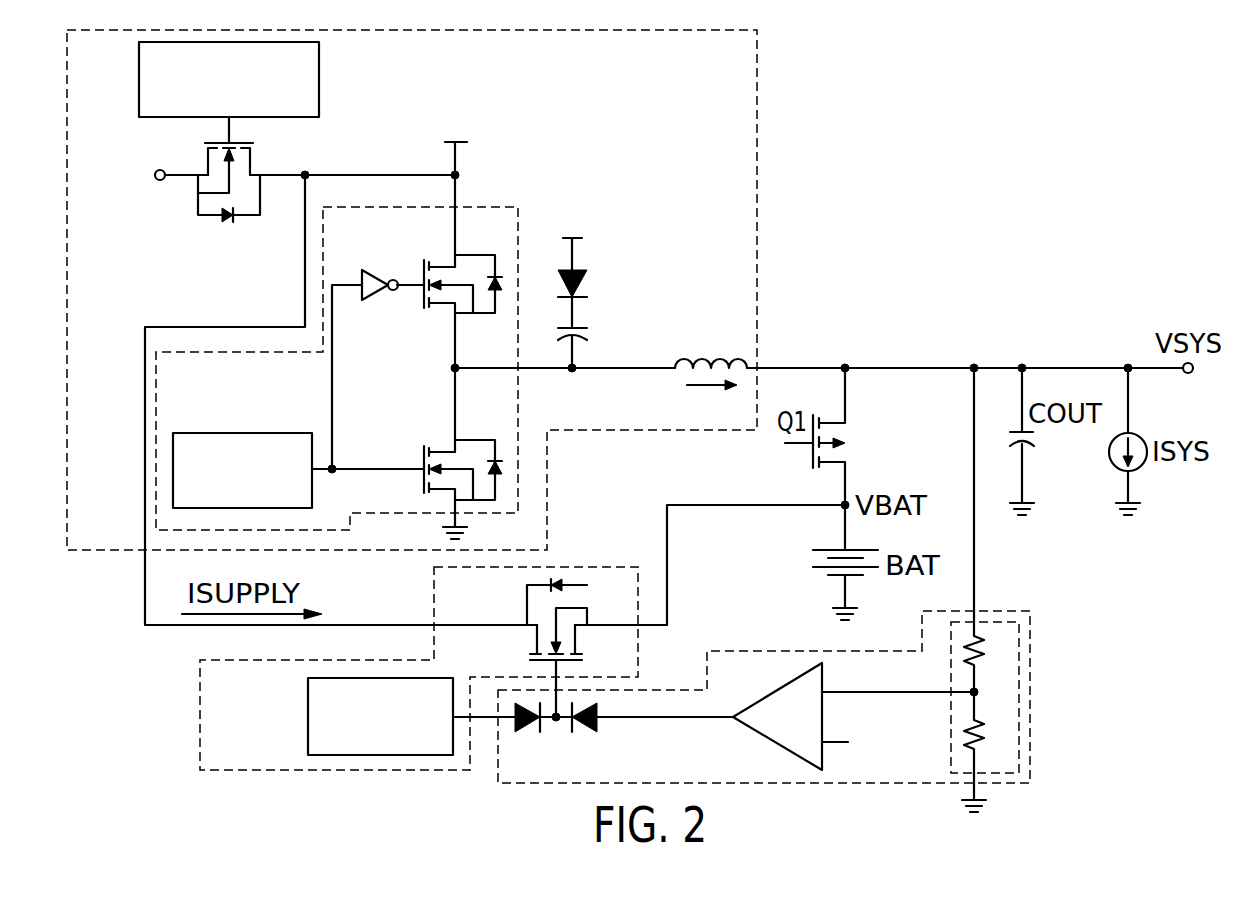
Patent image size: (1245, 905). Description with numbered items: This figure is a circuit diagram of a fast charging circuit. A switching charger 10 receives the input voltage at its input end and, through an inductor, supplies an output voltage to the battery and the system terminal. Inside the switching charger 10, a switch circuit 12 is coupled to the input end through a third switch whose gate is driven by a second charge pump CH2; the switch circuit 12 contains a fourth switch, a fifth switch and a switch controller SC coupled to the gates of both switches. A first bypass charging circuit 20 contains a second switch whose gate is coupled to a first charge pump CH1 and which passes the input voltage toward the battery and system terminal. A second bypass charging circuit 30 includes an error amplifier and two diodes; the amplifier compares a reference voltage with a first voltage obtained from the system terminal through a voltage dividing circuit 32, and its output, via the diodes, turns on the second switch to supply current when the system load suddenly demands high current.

The switching charger 10 is at (757, 112).
The switch circuit 12 is at (487, 207).
The first bypass charging circuit 20 is at (198, 716).
The second bypass charging circuit 30 is at (1030, 703).
The voltage dividing circuit 32 is at (1019, 638).
The first charge pump CH1 is at (306, 716).
The second charge pump CH2 is at (319, 82).
The switch controller SC is at (241, 432).